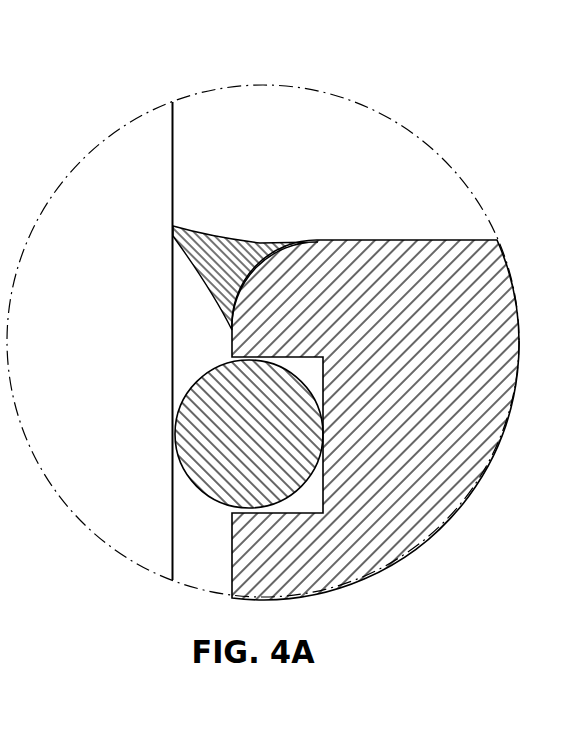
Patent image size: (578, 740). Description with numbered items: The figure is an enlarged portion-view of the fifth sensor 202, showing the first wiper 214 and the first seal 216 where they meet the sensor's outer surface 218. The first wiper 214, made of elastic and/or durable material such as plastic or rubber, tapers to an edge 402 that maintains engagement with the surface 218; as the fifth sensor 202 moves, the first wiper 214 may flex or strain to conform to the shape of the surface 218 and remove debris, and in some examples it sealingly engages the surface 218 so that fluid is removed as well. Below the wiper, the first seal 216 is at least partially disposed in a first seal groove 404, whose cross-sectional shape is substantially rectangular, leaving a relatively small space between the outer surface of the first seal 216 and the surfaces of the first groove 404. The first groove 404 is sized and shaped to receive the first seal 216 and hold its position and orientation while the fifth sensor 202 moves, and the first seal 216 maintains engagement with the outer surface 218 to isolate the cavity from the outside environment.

The fifth sensor 202 is at (208, 123).
The first wiper 214 is at (238, 242).
The first seal 216 is at (218, 508).
The outer surface 218 is at (116, 341).
The edge 402 is at (175, 226).
The first seal groove 404 is at (308, 369).